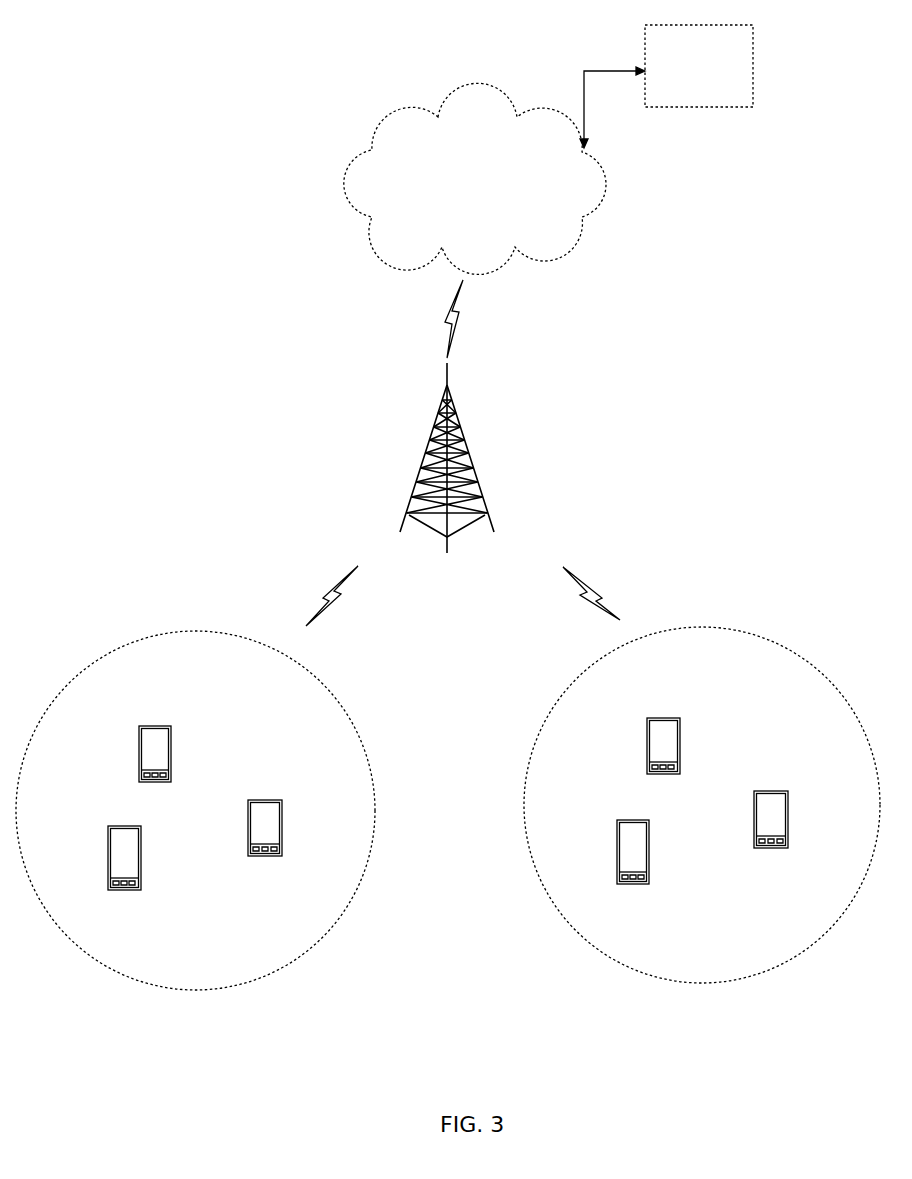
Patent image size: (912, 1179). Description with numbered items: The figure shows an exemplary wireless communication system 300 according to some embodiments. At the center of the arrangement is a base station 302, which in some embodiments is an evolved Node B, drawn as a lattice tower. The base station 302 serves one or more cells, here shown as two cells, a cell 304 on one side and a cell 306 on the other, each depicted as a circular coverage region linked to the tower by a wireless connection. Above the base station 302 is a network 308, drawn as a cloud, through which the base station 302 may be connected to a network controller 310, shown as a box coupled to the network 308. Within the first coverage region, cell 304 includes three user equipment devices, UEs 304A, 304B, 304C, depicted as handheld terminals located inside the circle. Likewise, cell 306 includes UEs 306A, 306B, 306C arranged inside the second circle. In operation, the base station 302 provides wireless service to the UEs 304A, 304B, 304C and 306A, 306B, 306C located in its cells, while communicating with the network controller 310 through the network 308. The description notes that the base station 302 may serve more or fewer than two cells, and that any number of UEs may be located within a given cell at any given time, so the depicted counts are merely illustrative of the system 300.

The wireless communication system 300 is at (118, 73).
The base station 302 is at (450, 392).
The cell 304 is at (232, 635).
The UE 304A is at (171, 728).
The UE 304B is at (282, 802).
The UE 304C is at (141, 828).
The cell 306 is at (742, 632).
The UE 306A is at (680, 722).
The UE 306B is at (788, 794).
The UE 306C is at (649, 823).
The network 308 is at (616, 165).
The network controller 310 is at (753, 57).